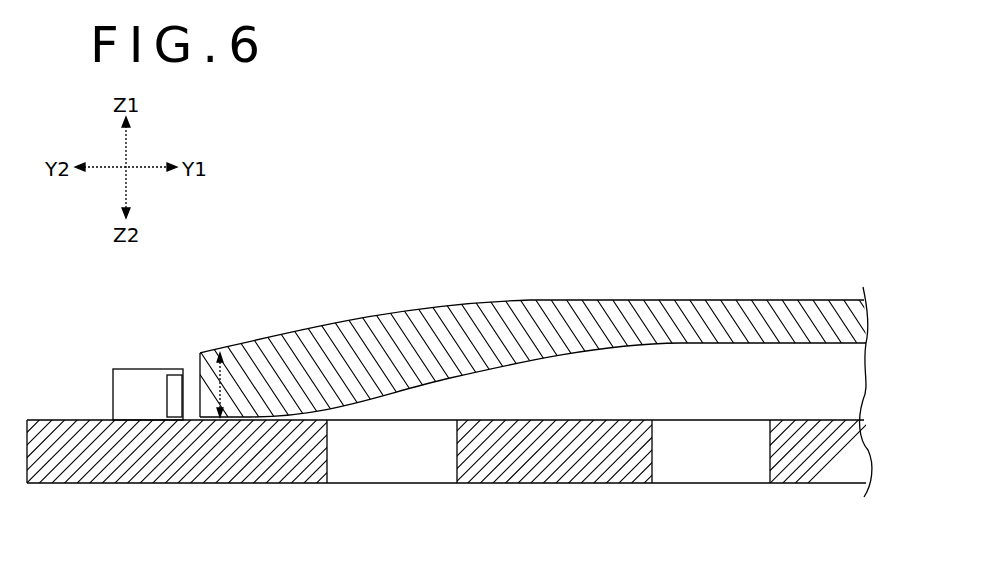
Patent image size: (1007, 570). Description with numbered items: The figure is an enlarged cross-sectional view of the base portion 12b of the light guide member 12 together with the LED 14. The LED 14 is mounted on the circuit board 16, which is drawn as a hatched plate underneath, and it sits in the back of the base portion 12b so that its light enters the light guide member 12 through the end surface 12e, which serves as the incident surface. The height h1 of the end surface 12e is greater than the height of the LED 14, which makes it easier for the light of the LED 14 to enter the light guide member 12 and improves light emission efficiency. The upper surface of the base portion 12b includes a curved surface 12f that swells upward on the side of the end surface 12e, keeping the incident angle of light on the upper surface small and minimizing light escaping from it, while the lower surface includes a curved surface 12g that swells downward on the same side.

The light guide member 12 is at (548, 344).
The base portion 12b is at (693, 315).
The end surface 12e is at (200, 372).
The curved surface 12f is at (328, 320).
The curved surface 12g is at (367, 397).
The LED 14 is at (113, 397).
The circuit board 16 is at (114, 421).
The height of end surface h1 is at (236, 385).